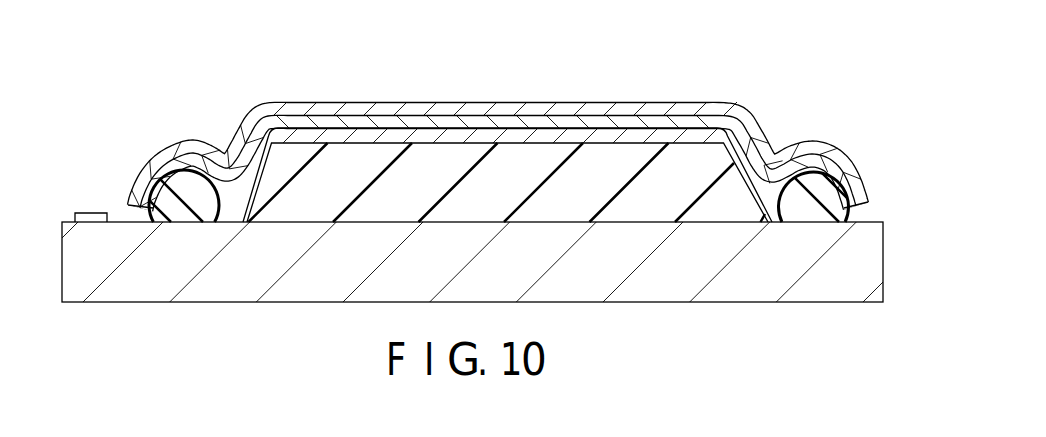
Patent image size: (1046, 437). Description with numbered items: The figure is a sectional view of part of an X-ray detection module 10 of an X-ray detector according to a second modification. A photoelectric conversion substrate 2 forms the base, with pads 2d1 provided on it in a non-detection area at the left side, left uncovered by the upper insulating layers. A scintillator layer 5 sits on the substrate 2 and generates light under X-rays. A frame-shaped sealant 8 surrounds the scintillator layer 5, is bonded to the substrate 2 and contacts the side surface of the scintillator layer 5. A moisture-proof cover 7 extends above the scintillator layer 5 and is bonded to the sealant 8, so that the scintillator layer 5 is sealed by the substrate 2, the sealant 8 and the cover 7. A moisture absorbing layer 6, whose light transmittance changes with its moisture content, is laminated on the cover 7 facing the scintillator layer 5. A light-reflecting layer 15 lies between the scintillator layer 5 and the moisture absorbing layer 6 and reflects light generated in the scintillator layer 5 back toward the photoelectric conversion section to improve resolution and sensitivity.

The photoelectric conversion substrate 2 is at (503, 262).
The pads 2d1 is at (91, 189).
The scintillator layer 5 is at (507, 135).
The moisture absorbing layer 6 is at (498, 129).
The moisture-proof cover 7 is at (498, 125).
The sealant 8 is at (498, 152).
The X-ray detection module 10 is at (886, 86).
The light-reflecting layer 15 is at (507, 137).